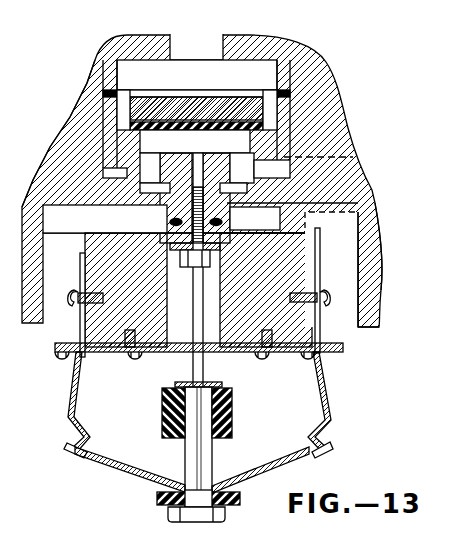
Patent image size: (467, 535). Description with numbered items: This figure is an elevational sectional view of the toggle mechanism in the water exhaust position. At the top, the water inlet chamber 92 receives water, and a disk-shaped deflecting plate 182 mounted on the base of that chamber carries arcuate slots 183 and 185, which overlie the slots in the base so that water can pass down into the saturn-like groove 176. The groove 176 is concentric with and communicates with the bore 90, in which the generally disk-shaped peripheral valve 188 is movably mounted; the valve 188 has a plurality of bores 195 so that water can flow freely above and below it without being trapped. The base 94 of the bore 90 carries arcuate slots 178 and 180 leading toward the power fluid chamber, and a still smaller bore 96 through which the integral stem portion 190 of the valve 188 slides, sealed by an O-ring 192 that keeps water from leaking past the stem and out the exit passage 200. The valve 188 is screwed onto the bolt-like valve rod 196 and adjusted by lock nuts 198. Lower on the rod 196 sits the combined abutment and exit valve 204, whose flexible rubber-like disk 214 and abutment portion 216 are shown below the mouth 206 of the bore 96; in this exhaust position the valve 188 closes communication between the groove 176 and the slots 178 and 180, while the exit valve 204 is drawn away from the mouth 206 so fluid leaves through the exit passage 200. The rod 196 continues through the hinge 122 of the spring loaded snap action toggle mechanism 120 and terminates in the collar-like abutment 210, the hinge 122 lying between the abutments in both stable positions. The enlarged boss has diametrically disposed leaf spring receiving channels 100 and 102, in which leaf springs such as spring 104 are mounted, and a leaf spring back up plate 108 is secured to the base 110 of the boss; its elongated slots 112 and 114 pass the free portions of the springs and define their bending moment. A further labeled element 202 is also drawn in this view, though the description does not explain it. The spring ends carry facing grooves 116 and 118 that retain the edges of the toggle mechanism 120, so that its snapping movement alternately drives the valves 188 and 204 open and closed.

The water inlet chamber 92 is at (231, 73).
The deflecting plate 182 is at (212, 107).
The arcuate slot 183 is at (297, 108).
The arcuate slot 185 is at (123, 107).
The bores 195 is at (294, 134).
The exit passage 200 is at (366, 158).
The stem portion 190 is at (340, 196).
The bore 90 is at (137, 158).
The saturn-like groove 176 is at (117, 172).
The peripheral valve 188 is at (173, 163).
The bore 96 is at (105, 236).
The base 94 is at (140, 206).
The arcuate slot 180 is at (163, 205).
The arcuate slot 178 is at (243, 203).
The lock nuts 198 is at (173, 253).
The leaf spring receiving channel 102 is at (82, 270).
The O-ring 192 is at (307, 232).
The valve rod 196 is at (324, 267).
The washer 202 is at (320, 240).
The leaf spring receiving channel 100 is at (340, 286).
The base of boss 110 is at (345, 318).
The leaf spring back up plate 108 is at (340, 353).
The leaf spring 104 is at (327, 400).
The elongated slot 112 is at (312, 360).
The elongated slot 114 is at (90, 352).
The mouth of bore 206 is at (180, 352).
The combined abutment and exit valve 204 is at (222, 384).
The flexible rubber-like disk 214 is at (165, 390).
The abutment portion 216 is at (232, 415).
The snap action toggle mechanism 120 is at (277, 458).
The hinge 122 is at (210, 473).
The groove 118 is at (306, 456).
The groove 116 is at (88, 452).
The collar-like abutment 210 is at (158, 498).